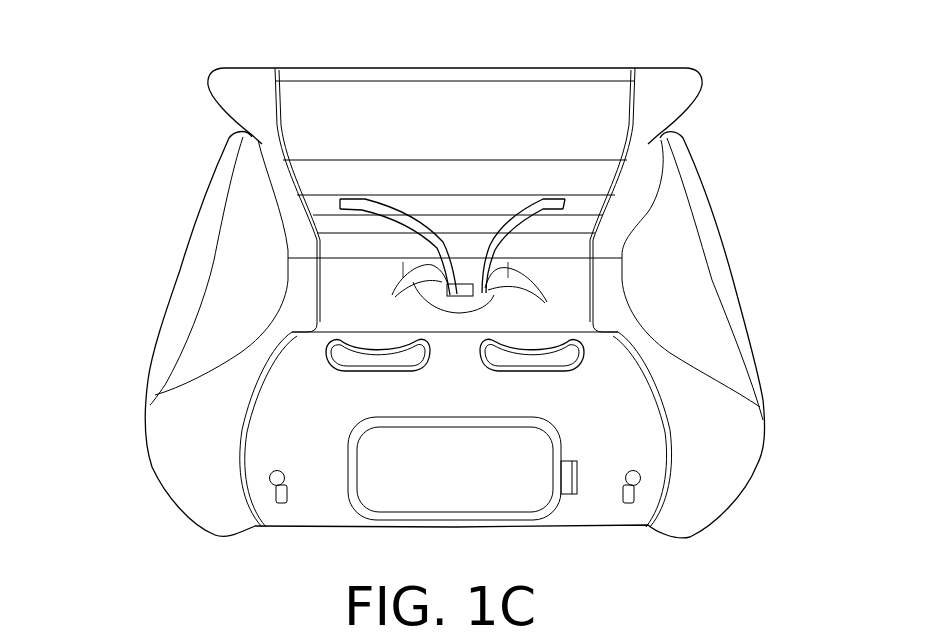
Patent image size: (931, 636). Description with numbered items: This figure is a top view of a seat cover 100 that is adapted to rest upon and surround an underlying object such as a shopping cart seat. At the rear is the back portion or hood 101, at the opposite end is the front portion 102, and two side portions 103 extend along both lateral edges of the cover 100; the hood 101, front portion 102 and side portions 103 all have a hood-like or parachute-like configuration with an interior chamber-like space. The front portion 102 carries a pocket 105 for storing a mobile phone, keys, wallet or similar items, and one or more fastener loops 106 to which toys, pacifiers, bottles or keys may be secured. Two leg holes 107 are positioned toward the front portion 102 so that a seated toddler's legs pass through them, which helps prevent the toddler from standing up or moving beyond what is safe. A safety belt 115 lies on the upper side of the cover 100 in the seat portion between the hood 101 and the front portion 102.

The seat cover 100 is at (130, 140).
The hood 101 is at (602, 98).
The front portion 102 is at (705, 500).
The side portions 103 is at (713, 262).
The pocket 105 is at (500, 493).
The loop 106 is at (277, 503).
The leg holes 107 is at (532, 363).
The safety belt 115 is at (387, 185).